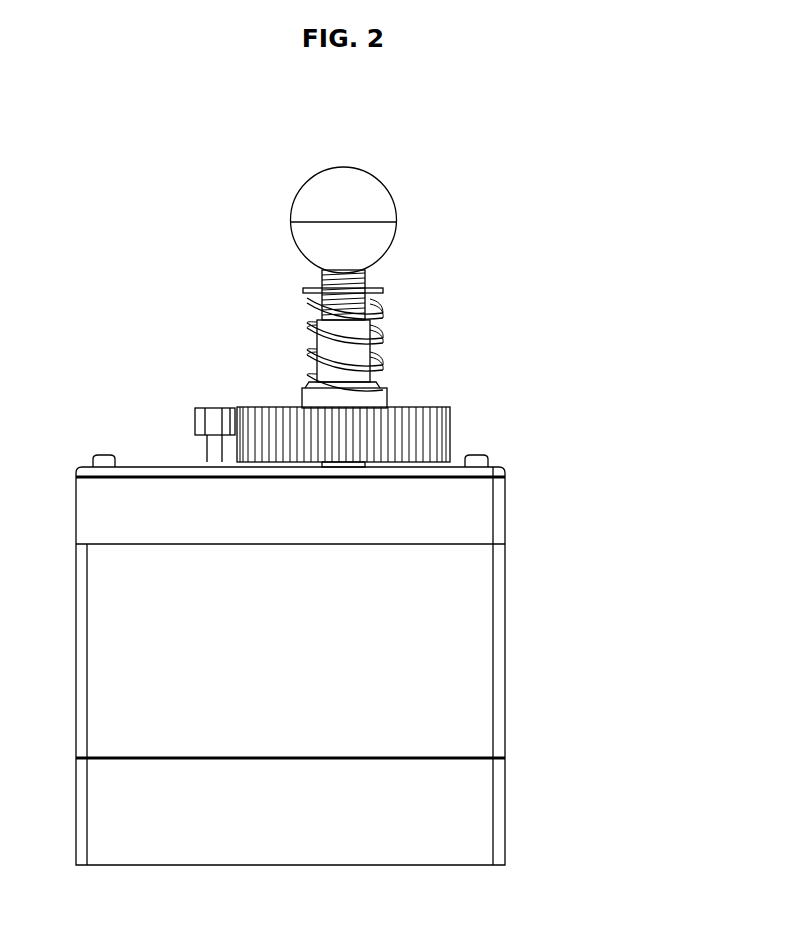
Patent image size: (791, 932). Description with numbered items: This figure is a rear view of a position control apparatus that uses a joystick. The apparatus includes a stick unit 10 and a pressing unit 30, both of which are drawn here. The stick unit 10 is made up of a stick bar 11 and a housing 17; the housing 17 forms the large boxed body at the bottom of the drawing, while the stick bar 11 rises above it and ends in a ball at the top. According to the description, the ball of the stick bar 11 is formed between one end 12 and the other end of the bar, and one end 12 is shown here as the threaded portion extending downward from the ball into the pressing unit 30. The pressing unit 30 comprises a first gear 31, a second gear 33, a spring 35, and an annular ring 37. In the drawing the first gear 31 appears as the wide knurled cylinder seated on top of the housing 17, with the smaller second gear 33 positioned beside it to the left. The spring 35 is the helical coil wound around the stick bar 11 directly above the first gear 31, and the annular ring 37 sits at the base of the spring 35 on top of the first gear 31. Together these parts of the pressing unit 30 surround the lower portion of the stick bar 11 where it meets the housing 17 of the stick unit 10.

The stick unit 10 is at (292, 180).
The stick bar 11 is at (380, 180).
The one end 12 is at (298, 252).
The housing 17 is at (506, 495).
The pressing unit 30 is at (452, 344).
The first gear 31 is at (450, 407).
The second gear 33 is at (206, 408).
The spring 35 is at (382, 336).
The annular ring 37 is at (383, 392).